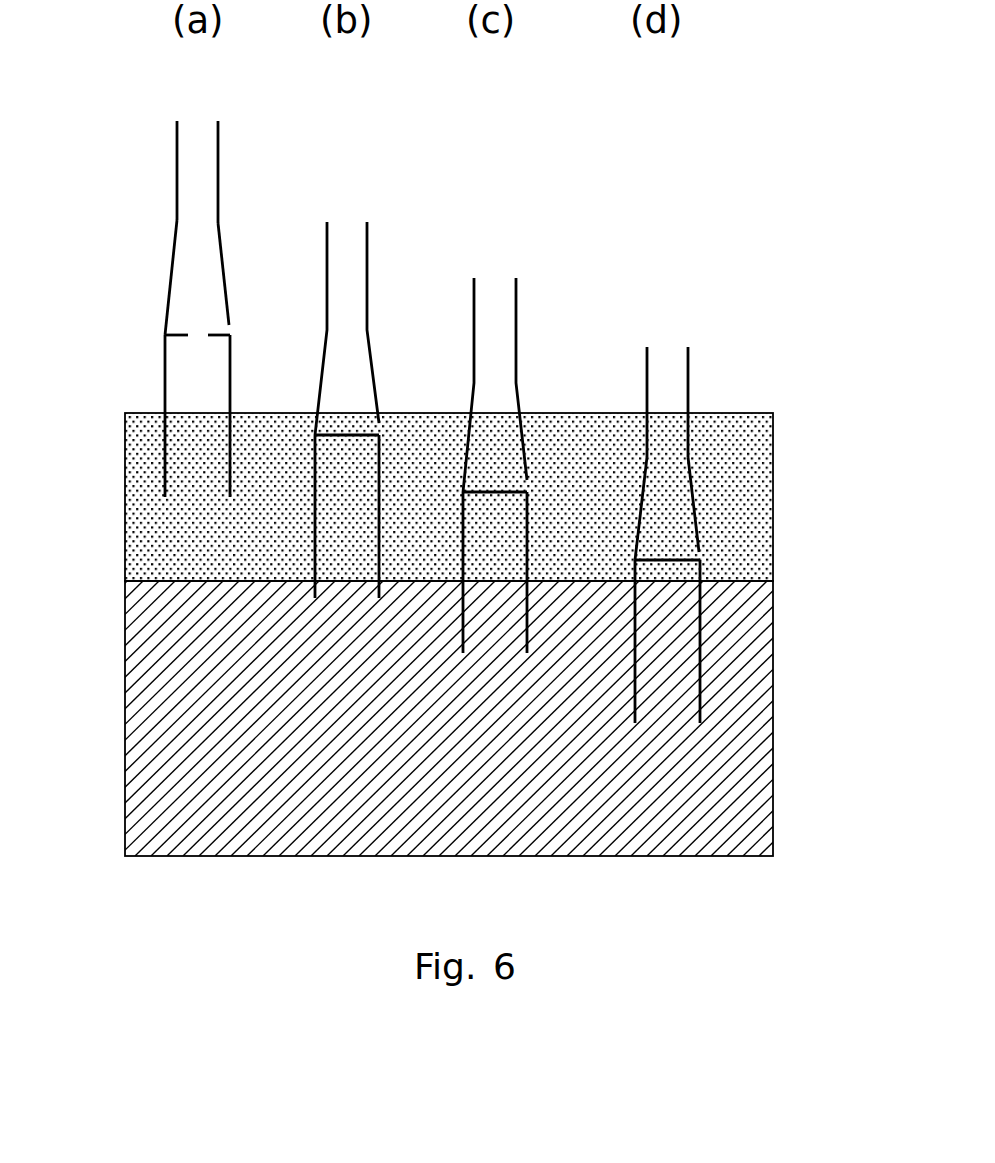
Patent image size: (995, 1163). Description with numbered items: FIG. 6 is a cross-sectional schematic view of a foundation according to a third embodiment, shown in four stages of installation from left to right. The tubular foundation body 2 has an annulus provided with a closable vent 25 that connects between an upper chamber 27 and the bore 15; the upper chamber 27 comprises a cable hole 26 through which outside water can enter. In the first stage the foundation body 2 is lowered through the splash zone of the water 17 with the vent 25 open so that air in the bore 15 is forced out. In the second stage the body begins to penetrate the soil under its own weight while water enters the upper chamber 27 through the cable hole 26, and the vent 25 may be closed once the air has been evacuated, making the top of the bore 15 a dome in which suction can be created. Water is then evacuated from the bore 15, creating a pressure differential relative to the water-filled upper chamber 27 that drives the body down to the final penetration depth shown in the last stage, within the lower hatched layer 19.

The foundation body 2 is at (455, 422).
The upper chamber 27 is at (188, 220).
The cable hole 26 is at (228, 325).
The closable vent 25 is at (198, 337).
The bore 15 is at (195, 364).
The water 17 is at (145, 460).
The first layer 19 is at (158, 720).